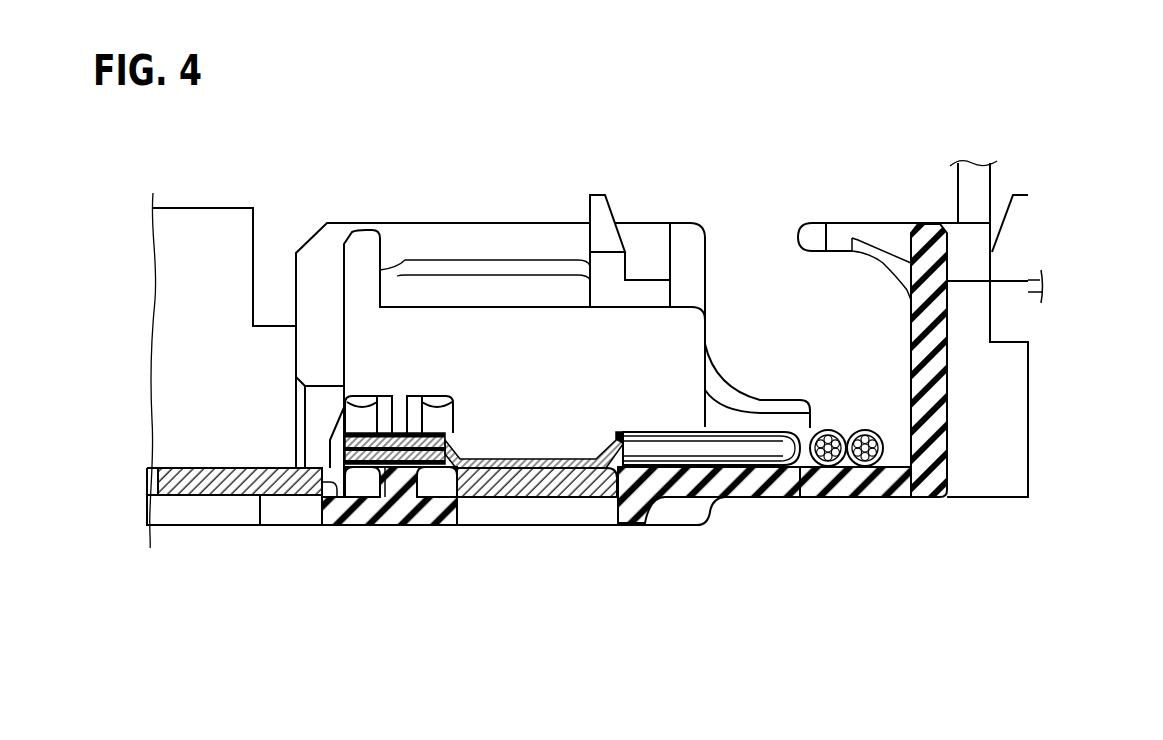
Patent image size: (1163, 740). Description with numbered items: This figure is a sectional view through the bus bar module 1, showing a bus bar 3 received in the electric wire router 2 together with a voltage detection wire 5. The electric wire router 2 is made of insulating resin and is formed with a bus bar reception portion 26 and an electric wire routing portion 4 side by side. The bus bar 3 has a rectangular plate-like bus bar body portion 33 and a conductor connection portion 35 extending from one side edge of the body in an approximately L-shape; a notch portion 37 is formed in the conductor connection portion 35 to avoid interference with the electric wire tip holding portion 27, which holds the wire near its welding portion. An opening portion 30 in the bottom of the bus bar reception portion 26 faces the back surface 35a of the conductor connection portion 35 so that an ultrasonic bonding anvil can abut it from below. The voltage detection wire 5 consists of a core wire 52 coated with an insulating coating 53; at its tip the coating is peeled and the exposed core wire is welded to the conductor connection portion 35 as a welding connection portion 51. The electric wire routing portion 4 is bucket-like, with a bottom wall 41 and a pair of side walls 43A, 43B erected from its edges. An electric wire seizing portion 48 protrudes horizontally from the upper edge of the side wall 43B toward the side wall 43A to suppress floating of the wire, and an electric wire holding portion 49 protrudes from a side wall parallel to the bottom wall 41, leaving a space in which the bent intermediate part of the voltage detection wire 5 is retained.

The bus bar module 1 is at (912, 154).
The electric wire router 2 is at (410, 212).
The bus bar 3 is at (265, 456).
The electric wire routing portion 4 is at (792, 286).
The voltage detection wire 5 is at (805, 470).
The bus bar reception portion 26 is at (189, 302).
The electric wire tip holding portion 27 is at (422, 382).
The opening portion 30 is at (616, 506).
The bus bar body portion 33 is at (213, 467).
The conductor connection portion 35 is at (572, 467).
The back surface of the conductor connection portion 35a is at (518, 498).
The notch portion 37 is at (340, 513).
The bottom wall 41 is at (887, 463).
The side wall 43A is at (680, 253).
The side wall 43B is at (935, 350).
The electric wire seizing portion 48 is at (848, 235).
The electric wire holding portion 49 is at (758, 400).
The welding connection portion 51 is at (533, 447).
The core wire 52 is at (877, 468).
The insulating coating 53 is at (864, 430).